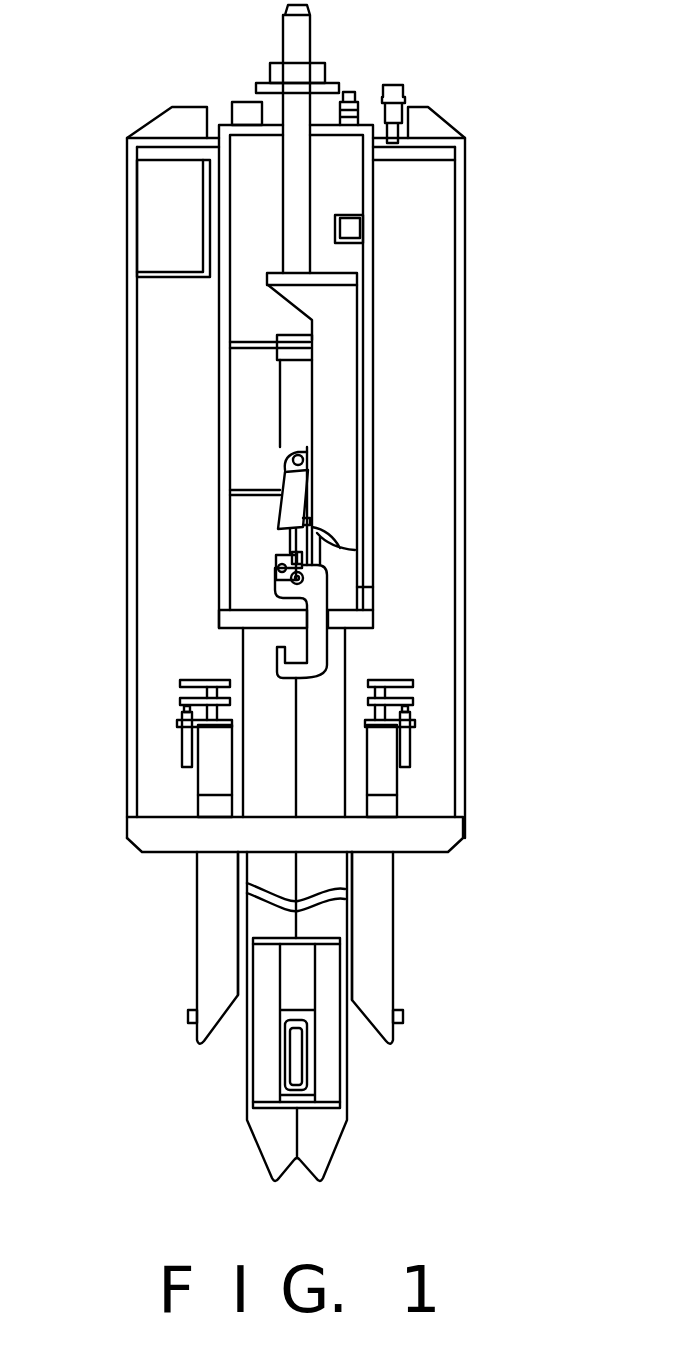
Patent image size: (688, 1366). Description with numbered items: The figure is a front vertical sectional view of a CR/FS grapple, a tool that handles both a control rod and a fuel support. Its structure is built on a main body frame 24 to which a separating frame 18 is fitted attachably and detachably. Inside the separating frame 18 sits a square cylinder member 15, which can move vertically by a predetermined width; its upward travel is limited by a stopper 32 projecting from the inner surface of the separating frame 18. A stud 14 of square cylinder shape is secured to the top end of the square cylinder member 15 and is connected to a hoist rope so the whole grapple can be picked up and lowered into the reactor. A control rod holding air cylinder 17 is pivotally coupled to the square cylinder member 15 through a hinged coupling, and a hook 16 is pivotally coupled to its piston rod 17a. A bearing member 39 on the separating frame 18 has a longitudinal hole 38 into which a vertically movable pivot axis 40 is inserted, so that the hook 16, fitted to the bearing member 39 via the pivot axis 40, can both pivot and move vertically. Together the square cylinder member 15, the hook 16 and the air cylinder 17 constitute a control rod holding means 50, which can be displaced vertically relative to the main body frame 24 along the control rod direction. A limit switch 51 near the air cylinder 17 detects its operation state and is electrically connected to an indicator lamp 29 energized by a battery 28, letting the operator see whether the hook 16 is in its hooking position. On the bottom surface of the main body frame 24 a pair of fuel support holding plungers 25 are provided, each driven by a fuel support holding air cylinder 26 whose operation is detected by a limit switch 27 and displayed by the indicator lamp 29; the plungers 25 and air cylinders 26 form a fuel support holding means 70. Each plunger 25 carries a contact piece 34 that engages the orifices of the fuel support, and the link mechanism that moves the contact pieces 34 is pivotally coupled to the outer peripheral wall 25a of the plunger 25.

The stud 14 is at (312, 32).
The square cylinder member 15 is at (358, 370).
The hook 16 is at (322, 655).
The control rod holding air cylinder 17 is at (278, 507).
The piston rod 17a is at (283, 543).
The separating frame 18 is at (368, 440).
The main body frame 24 is at (128, 381).
The fuel support holding plunger 25 is at (193, 957).
The outer peripheral wall 25a is at (197, 910).
The fuel support holding air cylinder 26 is at (198, 783).
The limit switch 27 is at (181, 743).
The battery 28 is at (152, 218).
The indicator lamp 29 is at (243, 104).
The stopper 32 is at (352, 215).
The contact piece 34 is at (190, 1017).
The longitudinal hole 38 is at (302, 553).
The bearing member 39 is at (282, 572).
The pivot axis 40 is at (303, 580).
The control rod holding means 50 is at (346, 617).
The limit switch 51 is at (310, 520).
The fuel support holding means 70 is at (400, 875).